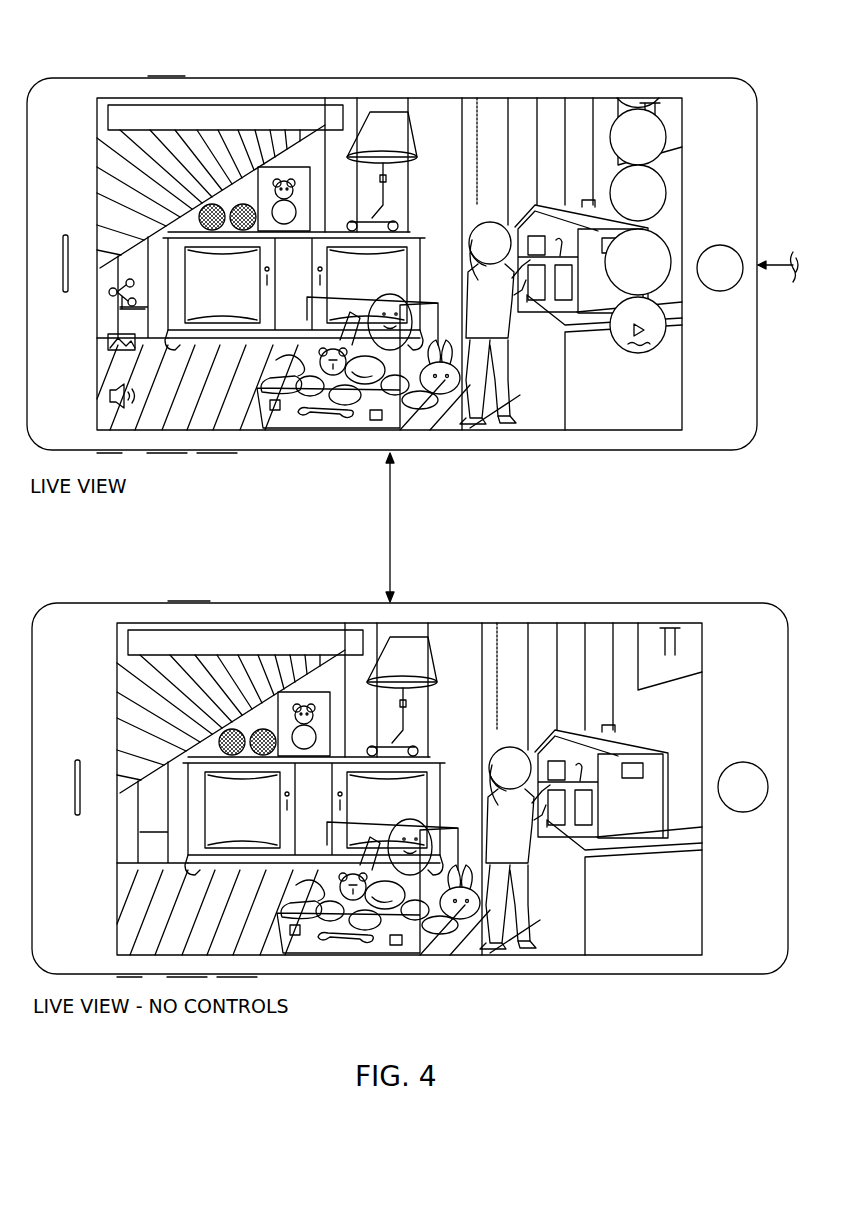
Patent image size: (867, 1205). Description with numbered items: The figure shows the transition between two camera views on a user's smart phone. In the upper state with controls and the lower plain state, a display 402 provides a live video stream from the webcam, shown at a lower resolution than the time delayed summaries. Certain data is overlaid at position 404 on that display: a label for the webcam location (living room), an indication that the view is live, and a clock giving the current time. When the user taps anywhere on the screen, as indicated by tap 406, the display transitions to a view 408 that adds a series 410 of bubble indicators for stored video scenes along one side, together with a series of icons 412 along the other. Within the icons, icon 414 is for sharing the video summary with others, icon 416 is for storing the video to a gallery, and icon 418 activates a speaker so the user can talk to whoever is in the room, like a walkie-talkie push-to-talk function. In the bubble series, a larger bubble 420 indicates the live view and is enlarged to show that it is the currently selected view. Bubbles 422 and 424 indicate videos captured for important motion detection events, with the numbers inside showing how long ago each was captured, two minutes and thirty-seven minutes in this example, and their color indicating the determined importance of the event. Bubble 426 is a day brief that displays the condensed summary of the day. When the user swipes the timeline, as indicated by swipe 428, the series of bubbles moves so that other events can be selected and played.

The display 402 is at (632, 603).
The overlay data position 404 is at (262, 626).
The screen tap 406 is at (385, 515).
The view 408 is at (607, 88).
The series of bubble indicators 410 is at (668, 114).
The series of icons 412 is at (120, 258).
The sharing icon 414 is at (107, 296).
The gallery storing icon 416 is at (102, 345).
The speaker talk icon 418 is at (108, 400).
The live view bubble 420 is at (668, 242).
The motion event bubble 422 is at (666, 195).
The motion event bubble 424 is at (666, 138).
The day brief bubble 426 is at (668, 330).
The timeline swipe 428 is at (794, 258).